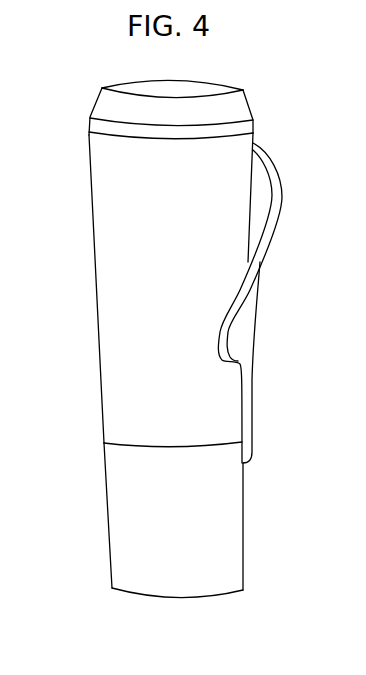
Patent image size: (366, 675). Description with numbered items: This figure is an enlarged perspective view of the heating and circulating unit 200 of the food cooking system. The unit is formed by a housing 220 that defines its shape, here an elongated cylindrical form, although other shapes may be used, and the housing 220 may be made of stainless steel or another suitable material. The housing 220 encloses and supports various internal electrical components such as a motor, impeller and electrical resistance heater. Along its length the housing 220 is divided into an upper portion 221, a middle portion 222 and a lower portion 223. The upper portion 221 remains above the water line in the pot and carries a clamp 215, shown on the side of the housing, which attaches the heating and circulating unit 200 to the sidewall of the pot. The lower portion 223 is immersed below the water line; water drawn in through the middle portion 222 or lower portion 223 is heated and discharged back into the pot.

The heating and circulating unit 200 is at (298, 96).
The clamp 215 is at (266, 258).
The housing 220 is at (101, 357).
The upper portion 221 is at (91, 163).
The middle portion 222 is at (100, 281).
The lower portion 223 is at (110, 527).